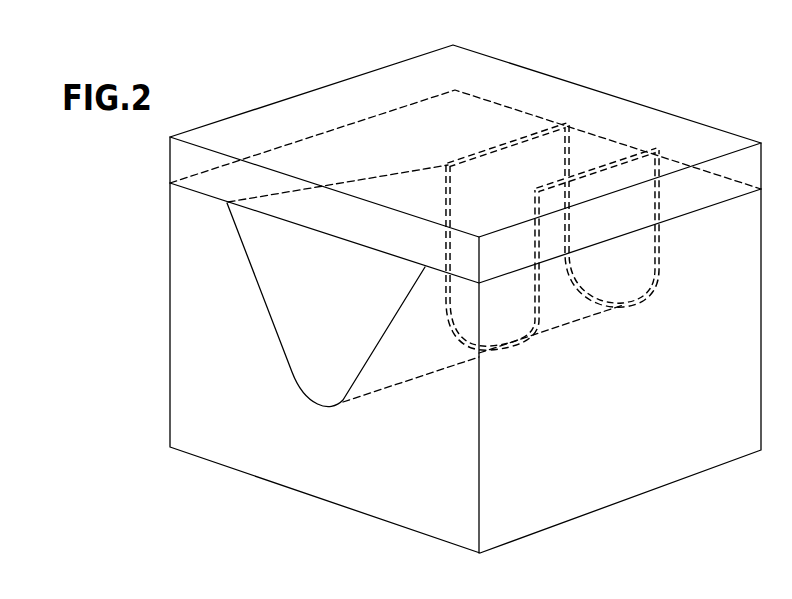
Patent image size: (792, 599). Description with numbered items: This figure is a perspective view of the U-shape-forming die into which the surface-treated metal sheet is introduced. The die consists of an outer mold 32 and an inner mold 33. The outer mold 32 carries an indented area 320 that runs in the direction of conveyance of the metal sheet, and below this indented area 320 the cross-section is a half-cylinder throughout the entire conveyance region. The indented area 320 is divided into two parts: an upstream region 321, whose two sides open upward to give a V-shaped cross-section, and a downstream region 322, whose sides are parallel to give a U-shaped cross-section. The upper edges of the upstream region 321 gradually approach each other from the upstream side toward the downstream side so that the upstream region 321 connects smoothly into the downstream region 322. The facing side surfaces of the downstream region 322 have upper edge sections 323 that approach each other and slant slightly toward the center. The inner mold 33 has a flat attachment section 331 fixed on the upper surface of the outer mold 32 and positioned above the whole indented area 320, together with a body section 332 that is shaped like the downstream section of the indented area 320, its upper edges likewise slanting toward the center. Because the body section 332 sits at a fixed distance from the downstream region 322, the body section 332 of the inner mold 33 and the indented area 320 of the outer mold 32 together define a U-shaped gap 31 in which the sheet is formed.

The U-shaped gap 31 is at (445, 308).
The outer mold 32 is at (182, 403).
The inner mold 33 is at (465, 148).
The attachment section 331 is at (278, 107).
The body section 332 is at (445, 167).
The indented area 320 is at (483, 374).
The upstream region 321 is at (418, 358).
The downstream region 322 is at (576, 305).
The upper edge sections 323 is at (517, 153).